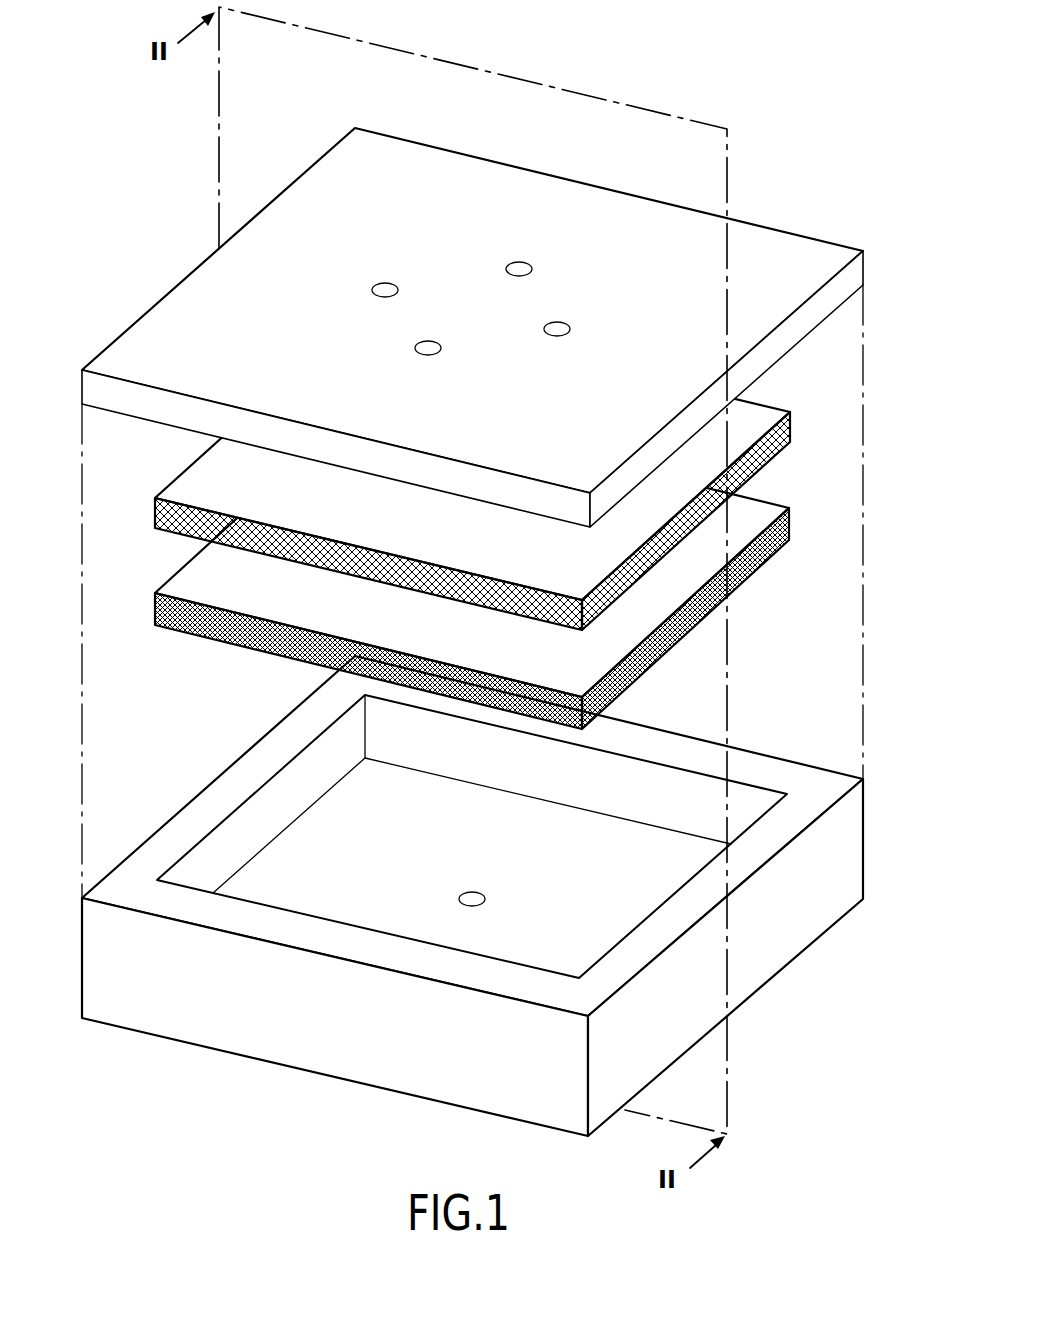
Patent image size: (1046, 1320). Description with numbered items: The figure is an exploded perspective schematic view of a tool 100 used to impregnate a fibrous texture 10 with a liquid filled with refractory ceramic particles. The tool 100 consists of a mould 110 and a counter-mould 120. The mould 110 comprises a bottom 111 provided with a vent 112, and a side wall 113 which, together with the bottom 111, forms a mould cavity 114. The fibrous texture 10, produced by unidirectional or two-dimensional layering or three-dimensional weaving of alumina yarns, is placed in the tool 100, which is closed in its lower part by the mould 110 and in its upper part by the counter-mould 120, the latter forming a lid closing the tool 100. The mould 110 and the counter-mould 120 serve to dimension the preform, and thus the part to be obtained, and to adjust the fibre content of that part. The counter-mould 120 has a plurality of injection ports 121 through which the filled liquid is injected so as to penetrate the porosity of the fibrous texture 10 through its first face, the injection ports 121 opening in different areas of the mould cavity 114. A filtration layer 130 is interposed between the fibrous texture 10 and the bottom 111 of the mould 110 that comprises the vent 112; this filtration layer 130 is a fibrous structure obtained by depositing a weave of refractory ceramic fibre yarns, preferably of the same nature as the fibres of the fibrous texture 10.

The tool 100 is at (181, 224).
The mould 110 is at (500, 896).
The bottom 111 is at (472, 836).
The vent 112 is at (483, 897).
The side wall 113 is at (270, 807).
The mould cavity 114 is at (430, 823).
The counter-mould 120 is at (472, 327).
The injection ports 121 is at (555, 329).
The fibrous texture 10 is at (795, 426).
The filtration layer 130 is at (790, 539).